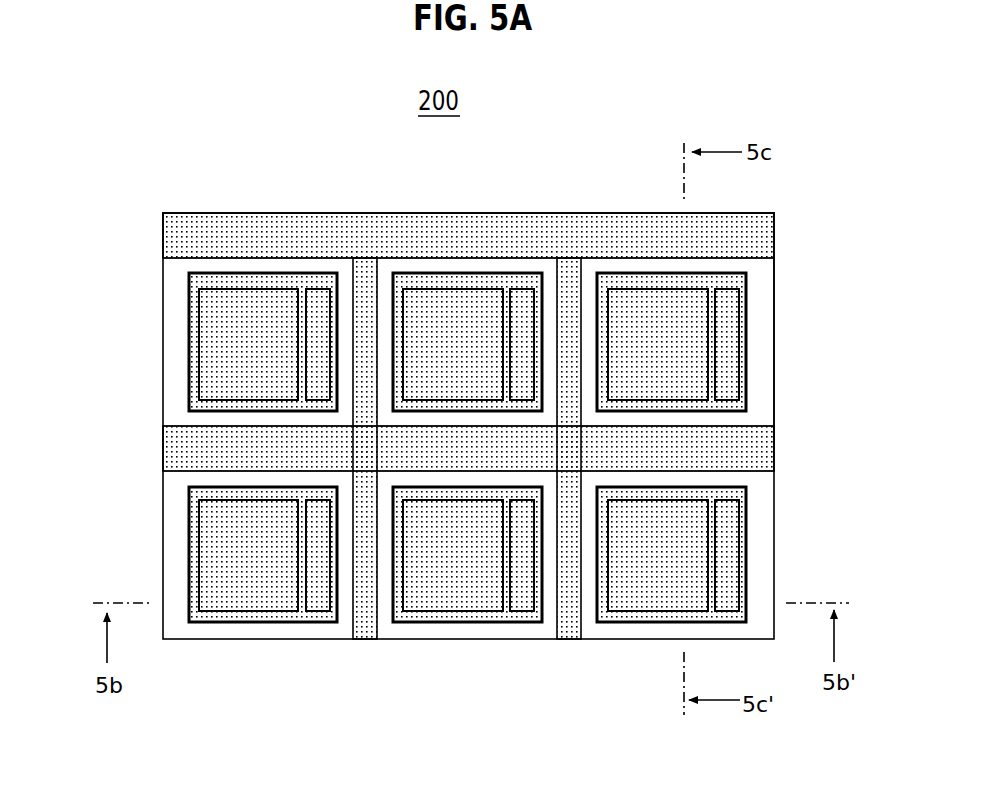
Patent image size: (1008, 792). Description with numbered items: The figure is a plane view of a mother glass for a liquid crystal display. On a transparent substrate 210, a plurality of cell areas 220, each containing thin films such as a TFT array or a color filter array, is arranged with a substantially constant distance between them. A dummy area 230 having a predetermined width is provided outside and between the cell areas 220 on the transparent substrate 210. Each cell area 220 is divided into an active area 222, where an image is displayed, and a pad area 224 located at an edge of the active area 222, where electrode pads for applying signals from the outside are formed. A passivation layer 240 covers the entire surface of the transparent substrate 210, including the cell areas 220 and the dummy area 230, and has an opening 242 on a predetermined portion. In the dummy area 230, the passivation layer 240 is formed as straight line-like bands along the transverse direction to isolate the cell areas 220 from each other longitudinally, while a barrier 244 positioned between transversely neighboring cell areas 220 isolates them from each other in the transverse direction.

The transparent substrate 210 is at (163, 297).
The cell areas 220 is at (189, 357).
The active area 222 is at (232, 300).
The pad area 224 is at (320, 300).
The dummy area 230 is at (178, 523).
The passivation layer 240 is at (765, 238).
The opening 242 is at (764, 338).
The barrier 244 is at (571, 277).